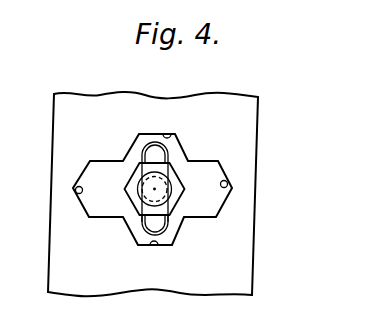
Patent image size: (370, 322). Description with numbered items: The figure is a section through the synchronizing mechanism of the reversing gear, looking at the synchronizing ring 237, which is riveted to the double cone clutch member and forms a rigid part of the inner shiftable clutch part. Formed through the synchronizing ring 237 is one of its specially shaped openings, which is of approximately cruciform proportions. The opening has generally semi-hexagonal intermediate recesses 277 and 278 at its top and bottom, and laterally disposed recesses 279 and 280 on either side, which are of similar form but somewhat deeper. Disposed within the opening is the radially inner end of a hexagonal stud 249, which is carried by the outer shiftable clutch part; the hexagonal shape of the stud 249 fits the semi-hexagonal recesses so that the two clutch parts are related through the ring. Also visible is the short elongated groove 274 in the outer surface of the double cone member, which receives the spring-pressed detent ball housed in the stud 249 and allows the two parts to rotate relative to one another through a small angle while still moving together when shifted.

The synchronizing ring 237 is at (92, 108).
The intermediate recess 277 is at (171, 135).
The lateral recess 279 is at (73, 188).
The lateral recess 280 is at (229, 183).
The stud 249 is at (135, 202).
The groove 274 is at (158, 224).
The intermediate recess 278 is at (155, 241).